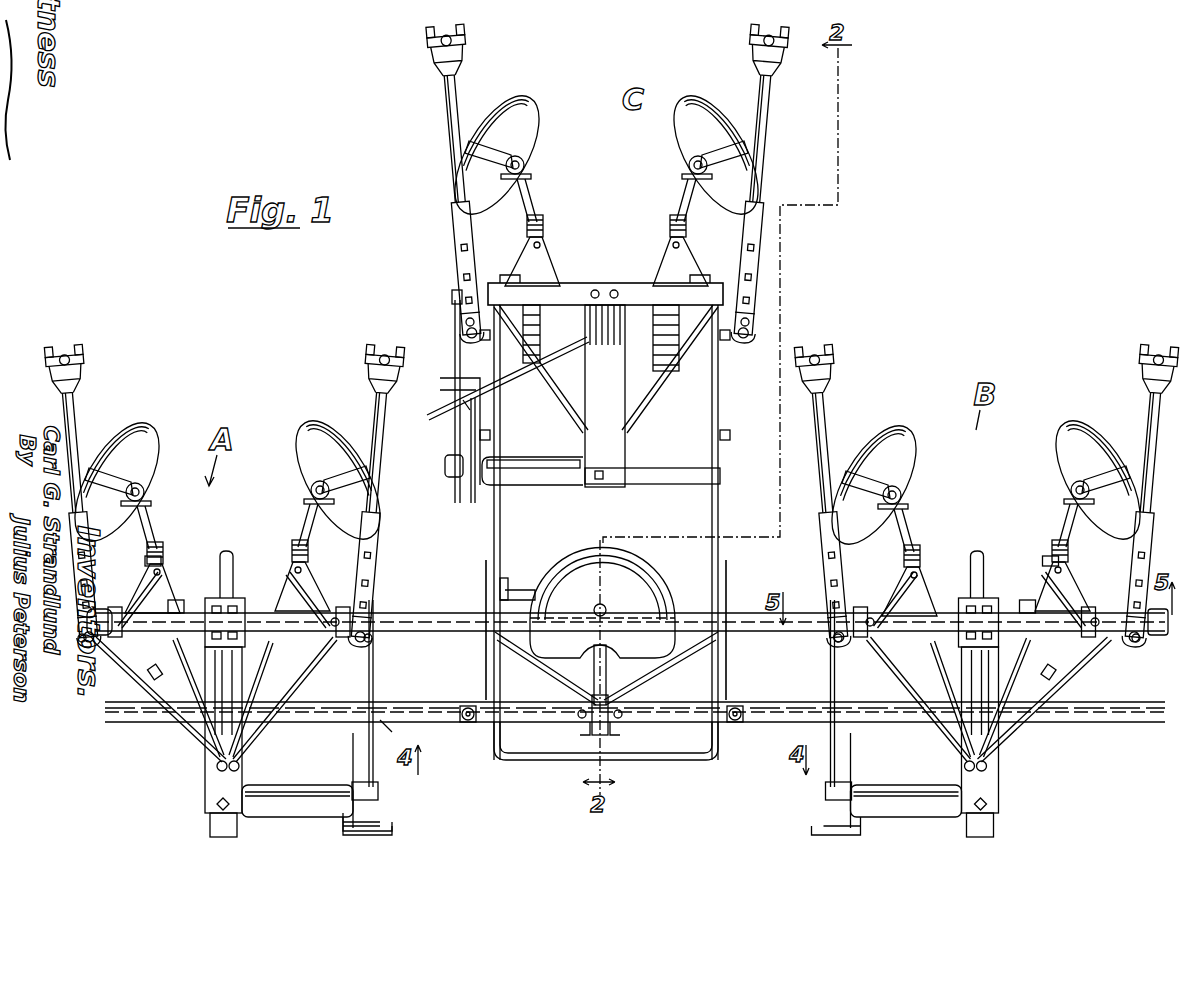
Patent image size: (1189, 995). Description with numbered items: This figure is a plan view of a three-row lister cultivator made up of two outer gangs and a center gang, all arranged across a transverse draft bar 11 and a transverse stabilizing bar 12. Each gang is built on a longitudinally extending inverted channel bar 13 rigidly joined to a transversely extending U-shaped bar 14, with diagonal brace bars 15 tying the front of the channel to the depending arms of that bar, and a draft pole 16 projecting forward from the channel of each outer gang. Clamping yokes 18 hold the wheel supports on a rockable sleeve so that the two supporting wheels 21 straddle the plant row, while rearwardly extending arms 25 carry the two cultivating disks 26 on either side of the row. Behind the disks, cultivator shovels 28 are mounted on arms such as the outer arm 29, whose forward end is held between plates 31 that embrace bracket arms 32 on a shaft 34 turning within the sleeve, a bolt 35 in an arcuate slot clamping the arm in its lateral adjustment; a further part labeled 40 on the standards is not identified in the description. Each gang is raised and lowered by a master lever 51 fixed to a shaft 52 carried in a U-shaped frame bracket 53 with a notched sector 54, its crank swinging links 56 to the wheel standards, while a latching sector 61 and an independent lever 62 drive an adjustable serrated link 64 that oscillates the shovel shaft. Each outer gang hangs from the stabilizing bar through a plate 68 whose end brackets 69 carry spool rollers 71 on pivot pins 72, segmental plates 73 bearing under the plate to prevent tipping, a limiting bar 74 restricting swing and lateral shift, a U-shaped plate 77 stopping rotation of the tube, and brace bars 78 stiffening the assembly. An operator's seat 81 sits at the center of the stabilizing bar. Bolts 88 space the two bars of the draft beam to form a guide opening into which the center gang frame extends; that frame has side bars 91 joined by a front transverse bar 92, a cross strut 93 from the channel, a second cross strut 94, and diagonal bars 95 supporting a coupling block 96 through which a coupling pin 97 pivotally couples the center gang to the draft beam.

The draft bar 11 is at (660, 712).
The stabilizing bar 12 is at (455, 622).
The inverted channel bar 13 is at (580, 425).
The U-shaped bar 14 is at (584, 277).
The diagonal brace bars 15 is at (560, 400).
The draft pole 16 is at (210, 825).
The clamping yokes 18 is at (552, 280).
The supporting wheels 21 is at (543, 225).
The disk supporting arms 25 is at (528, 185).
The cultivating disks 26 is at (535, 150).
The cultivator shovels 28 is at (435, 50).
The shovel supporting arm 29 is at (448, 108).
The plates 31 is at (458, 232).
The bracket arms 32 is at (470, 330).
The shaft 34 is at (455, 290).
The bolt 35 is at (465, 322).
The adjusting holes 40 is at (462, 258).
The master depth adjusting and lifting lever 51 is at (470, 400).
The shaft 52 is at (515, 460).
The U-shaped frame bracket 53 is at (530, 485).
The notched sector 54 is at (470, 500).
The link members 56 is at (636, 388).
The latching sector 61 is at (455, 440).
The independent depth adjusting lever 62 is at (445, 466).
The link 64 is at (455, 362).
The plate 68 is at (180, 600).
The U-shaped brackets 69 is at (114, 607).
The rollers 71 is at (140, 610).
The transverse pivot pins 72 is at (335, 615).
The segmental plates 73 is at (165, 556).
The limiting bar 74 is at (230, 555).
The U-shaped plate 77 is at (240, 612).
The brace bars 78 is at (217, 768).
The operator's seat 81 is at (580, 560).
The bolts 88 is at (736, 722).
The side bars 91 is at (494, 670).
The transverse bar 92 is at (678, 762).
The cross strut 93 is at (670, 468).
The second cross strut 94 is at (512, 598).
The diagonal bars 95 is at (556, 678).
The coupling block 96 is at (618, 735).
The coupling pin 97 is at (592, 725).